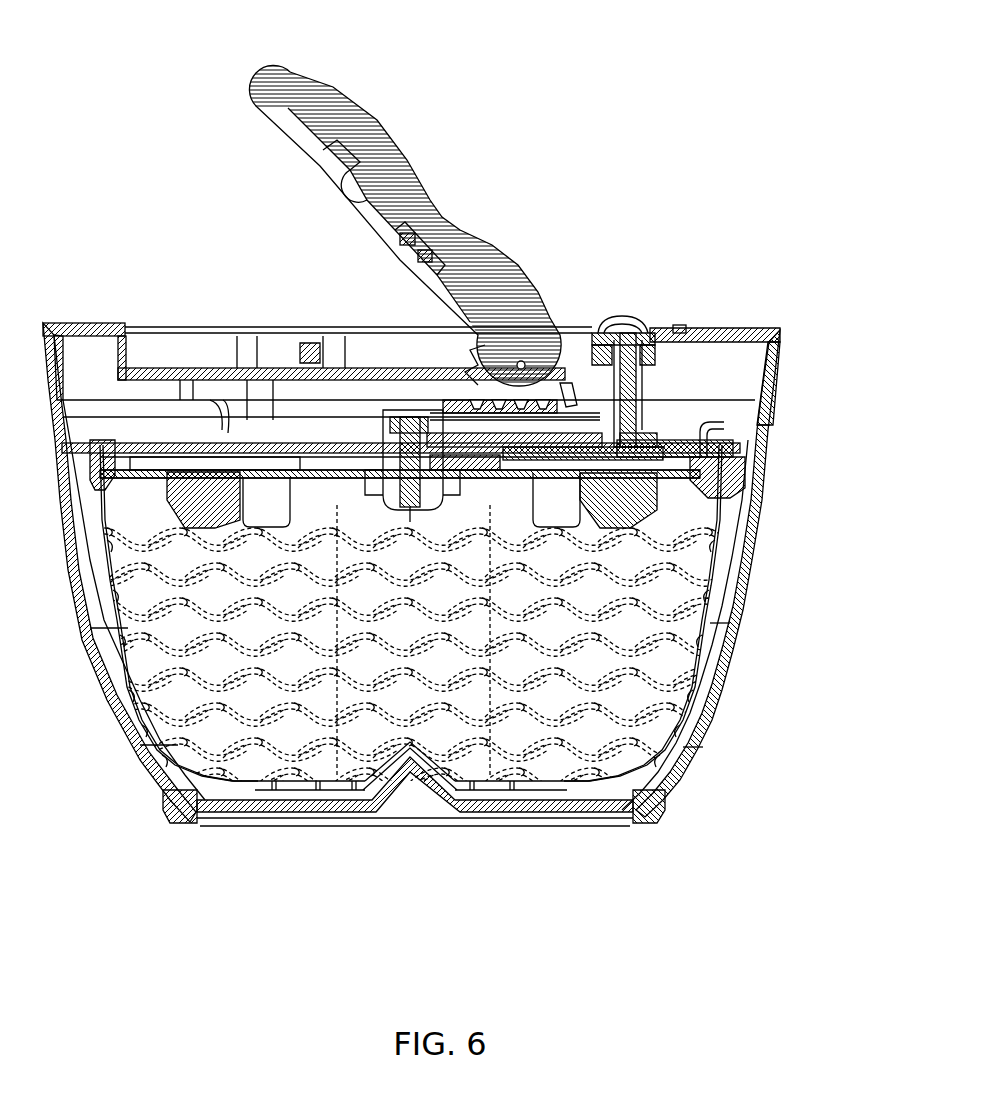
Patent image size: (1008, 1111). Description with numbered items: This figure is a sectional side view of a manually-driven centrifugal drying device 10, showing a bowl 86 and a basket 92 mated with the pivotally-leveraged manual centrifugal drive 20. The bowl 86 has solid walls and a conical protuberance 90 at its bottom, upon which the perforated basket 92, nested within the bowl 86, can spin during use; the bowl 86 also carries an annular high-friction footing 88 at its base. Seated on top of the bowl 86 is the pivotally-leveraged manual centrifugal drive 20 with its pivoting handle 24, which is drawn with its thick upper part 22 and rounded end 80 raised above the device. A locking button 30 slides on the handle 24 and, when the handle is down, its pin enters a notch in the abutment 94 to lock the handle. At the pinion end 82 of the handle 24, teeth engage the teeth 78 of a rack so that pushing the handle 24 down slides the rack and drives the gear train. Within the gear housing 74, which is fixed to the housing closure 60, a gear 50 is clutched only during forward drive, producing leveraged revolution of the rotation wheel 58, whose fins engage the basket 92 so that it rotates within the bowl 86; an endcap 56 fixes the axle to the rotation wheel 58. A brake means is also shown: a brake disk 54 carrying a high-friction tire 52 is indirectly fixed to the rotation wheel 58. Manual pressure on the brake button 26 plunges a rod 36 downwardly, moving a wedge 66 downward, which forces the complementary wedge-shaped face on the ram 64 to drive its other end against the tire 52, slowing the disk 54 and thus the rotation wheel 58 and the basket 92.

The manually-driven centrifugal drying device 10 is at (793, 277).
The pivotally-leveraged manual centrifugal drive 20 is at (717, 326).
The lid top wall 22 is at (679, 327).
The handle 24 is at (255, 108).
The brake button 26 is at (618, 325).
The locking button 30 is at (440, 217).
The rod 36 is at (638, 400).
The gear 50 is at (357, 417).
The high-friction tire 52 is at (460, 463).
The brake disk 54 is at (530, 497).
The endcap 56 is at (430, 513).
The rotation wheel 58 is at (720, 482).
The housing closure 60 is at (758, 418).
The ram 64 is at (600, 452).
The wedge 66 is at (565, 437).
The gear housing 74 is at (412, 450).
The teeth 78 is at (458, 403).
The handle knob 80 is at (345, 100).
The pinion end 82 is at (532, 343).
The bowl 86 is at (667, 790).
The annular high-friction footing 88 is at (640, 822).
The conical protuberance 90 is at (430, 793).
The basket 92 is at (242, 778).
The abutment 94 is at (383, 417).